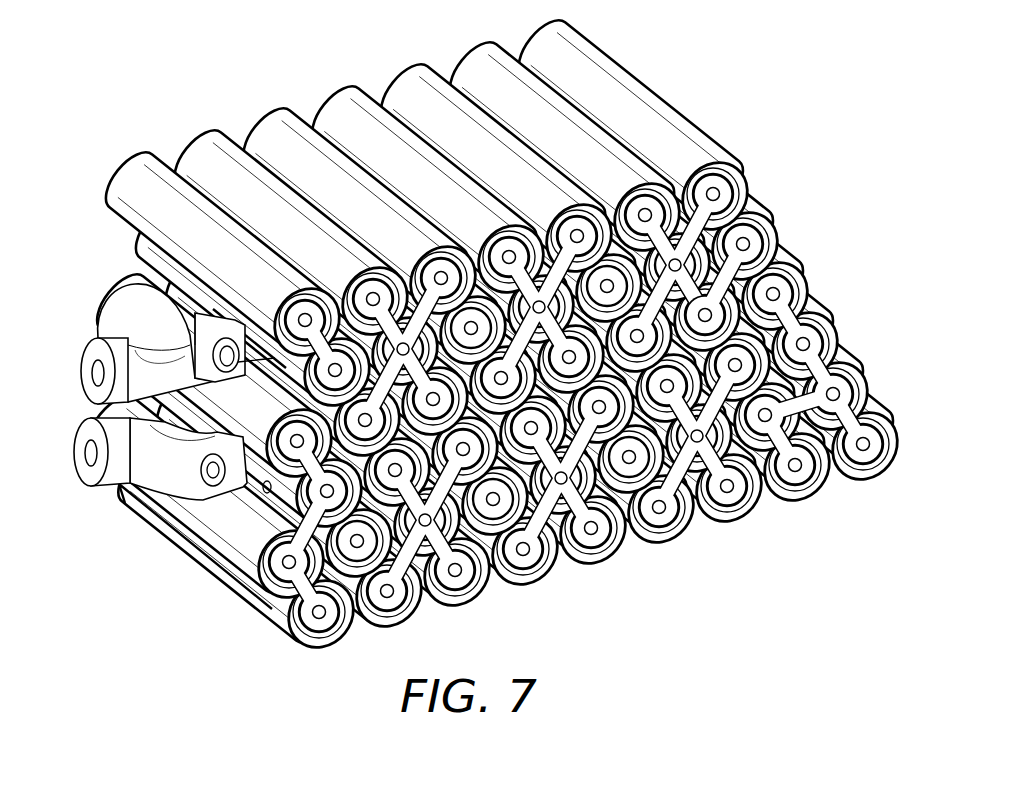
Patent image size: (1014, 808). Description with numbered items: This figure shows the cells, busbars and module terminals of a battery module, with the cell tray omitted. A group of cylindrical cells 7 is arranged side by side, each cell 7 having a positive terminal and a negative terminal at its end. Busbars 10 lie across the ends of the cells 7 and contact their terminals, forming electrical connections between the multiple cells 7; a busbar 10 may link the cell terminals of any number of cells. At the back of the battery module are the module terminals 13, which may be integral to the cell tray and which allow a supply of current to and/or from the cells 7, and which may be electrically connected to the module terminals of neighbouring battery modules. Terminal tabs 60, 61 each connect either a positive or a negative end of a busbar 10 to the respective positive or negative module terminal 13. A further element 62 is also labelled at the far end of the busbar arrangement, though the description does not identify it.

The cell 7 is at (640, 110).
The busbar 10 is at (601, 552).
The module terminal 13 is at (85, 368).
The terminal tab 60 is at (106, 288).
The terminal tab 61 is at (217, 577).
The end cell / bus bar end 62 is at (871, 456).